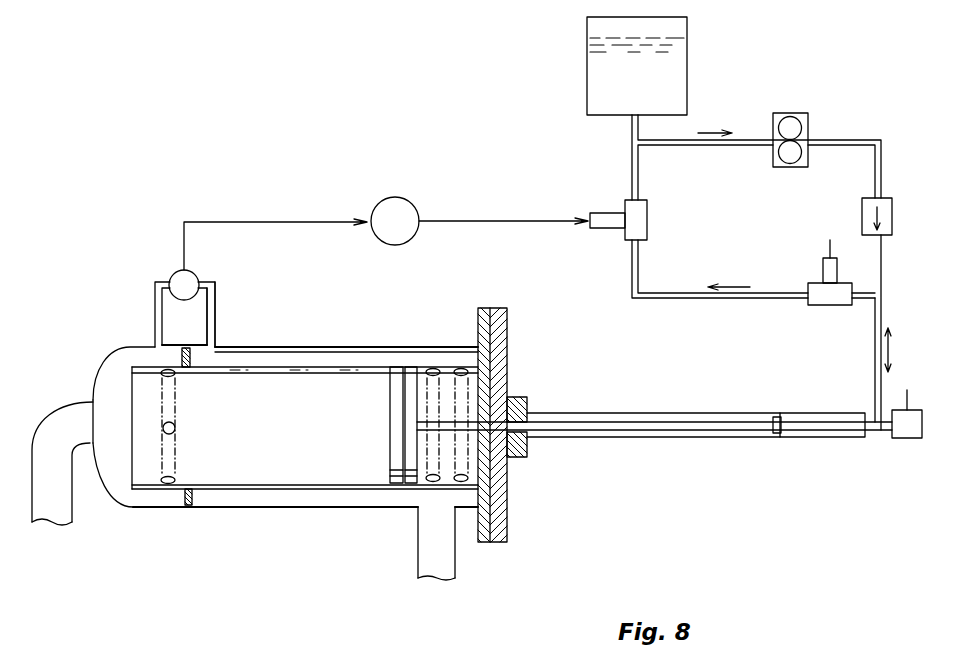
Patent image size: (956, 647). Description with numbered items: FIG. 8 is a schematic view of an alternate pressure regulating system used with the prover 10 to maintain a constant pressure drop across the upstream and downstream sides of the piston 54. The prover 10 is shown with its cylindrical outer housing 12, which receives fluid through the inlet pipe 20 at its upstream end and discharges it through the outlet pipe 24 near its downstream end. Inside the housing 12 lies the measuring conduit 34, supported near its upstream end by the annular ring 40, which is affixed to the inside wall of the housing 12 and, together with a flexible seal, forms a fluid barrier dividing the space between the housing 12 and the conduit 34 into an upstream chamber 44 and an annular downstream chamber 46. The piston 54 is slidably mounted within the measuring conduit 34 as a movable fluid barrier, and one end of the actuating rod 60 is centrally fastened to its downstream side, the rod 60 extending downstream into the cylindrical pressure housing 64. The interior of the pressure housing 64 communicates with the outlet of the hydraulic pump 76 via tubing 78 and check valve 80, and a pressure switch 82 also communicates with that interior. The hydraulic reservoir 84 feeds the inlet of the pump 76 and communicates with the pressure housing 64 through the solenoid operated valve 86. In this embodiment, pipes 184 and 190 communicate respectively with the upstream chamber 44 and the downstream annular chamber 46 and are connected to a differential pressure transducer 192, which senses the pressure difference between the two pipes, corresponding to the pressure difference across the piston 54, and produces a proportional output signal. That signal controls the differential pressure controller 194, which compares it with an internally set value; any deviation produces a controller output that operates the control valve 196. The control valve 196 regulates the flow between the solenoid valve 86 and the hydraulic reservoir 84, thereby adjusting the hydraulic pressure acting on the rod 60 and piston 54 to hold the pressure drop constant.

The prover 10 is at (160, 141).
The cylindrical outer housing 12 is at (298, 510).
The inlet pipe 20 is at (62, 420).
The outlet pipe 24 is at (418, 566).
The measuring conduit 34 is at (348, 365).
The annular ring 40 is at (184, 502).
The upstream chamber 44 is at (113, 375).
The annular downstream chamber 46 is at (283, 350).
The piston 54 is at (386, 411).
The actuating rod 60 is at (625, 413).
The cylindrical pressure housing 64 is at (827, 395).
The hydraulic pump 76 is at (790, 113).
The tubing 78 is at (873, 352).
The check valve 80 is at (892, 205).
The pressure switch 82 is at (907, 438).
The hydraulic reservoir 84 is at (587, 65).
The solenoid operated valve 86 is at (823, 283).
The pipe 184 is at (155, 318).
The pipe 190 is at (215, 318).
The differential pressure transducer 192 is at (197, 277).
The differential pressure controller 194 is at (410, 203).
The control valve 196 is at (625, 200).